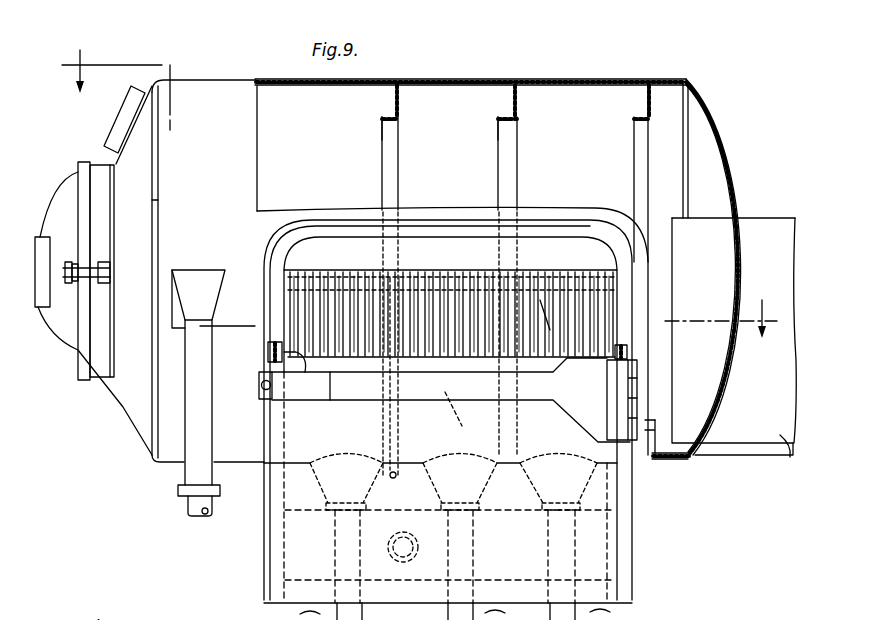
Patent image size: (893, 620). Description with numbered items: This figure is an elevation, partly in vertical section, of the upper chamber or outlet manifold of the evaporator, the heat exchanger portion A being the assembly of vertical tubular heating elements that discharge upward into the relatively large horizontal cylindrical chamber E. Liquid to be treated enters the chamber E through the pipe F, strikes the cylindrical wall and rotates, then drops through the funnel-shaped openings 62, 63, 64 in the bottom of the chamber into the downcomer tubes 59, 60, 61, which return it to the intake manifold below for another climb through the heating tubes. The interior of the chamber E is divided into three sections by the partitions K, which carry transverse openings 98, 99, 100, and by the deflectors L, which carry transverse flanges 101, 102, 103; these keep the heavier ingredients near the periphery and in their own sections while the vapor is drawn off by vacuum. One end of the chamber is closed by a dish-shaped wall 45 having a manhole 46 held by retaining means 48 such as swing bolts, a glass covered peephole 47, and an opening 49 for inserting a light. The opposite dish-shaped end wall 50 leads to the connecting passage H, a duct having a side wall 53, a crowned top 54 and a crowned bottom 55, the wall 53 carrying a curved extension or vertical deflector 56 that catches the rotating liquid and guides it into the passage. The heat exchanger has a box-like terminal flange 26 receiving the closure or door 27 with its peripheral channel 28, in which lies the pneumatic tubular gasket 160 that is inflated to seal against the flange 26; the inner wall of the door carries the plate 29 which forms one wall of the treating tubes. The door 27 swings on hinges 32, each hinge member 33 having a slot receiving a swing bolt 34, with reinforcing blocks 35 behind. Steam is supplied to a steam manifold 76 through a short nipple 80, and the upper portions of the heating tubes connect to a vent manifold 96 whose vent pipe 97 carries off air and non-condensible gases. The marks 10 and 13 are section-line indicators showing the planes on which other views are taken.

The section line 10- 10 is at (418, 185).
The section line 13-13 / clamp 13 is at (262, 354).
The terminal flange 26 is at (266, 305).
The closure 27 is at (544, 250).
The peripheral channel 28 is at (620, 527).
The plate 29 is at (550, 312).
The hinges 32 is at (607, 390).
The hinge member 33 is at (470, 386).
The swing bolt 34 is at (258, 386).
The reinforcing blocks 35 is at (462, 416).
The dish-shaped wall 45 is at (137, 204).
The manhole 46 is at (70, 343).
The glass covered peephole 47 is at (76, 170).
The retaining means 48 is at (93, 262).
The opening 49 is at (115, 116).
The dish-shaped end wall 50 is at (727, 162).
The side wall 53 is at (790, 355).
The top 54 is at (770, 213).
The bottom 55 is at (735, 448).
The extension 56 is at (712, 318).
The downcomer tube 59 is at (347, 545).
The downcomer tube 60 is at (463, 558).
The downcomer tube 61 is at (557, 557).
The funnel-shaped opening 62 is at (366, 488).
The funnel-shaped opening 63 is at (476, 490).
The funnel-shaped opening 64 is at (574, 489).
The steam manifold 76 is at (455, 611).
The short nipple 80 is at (403, 533).
The vent manifold 96 is at (423, 283).
The vent pipe 97 is at (390, 276).
The transverse opening 98 is at (392, 440).
The transverse opening 99 is at (520, 447).
The transverse opening 100 is at (656, 443).
The transverse flange 101 is at (383, 116).
The transverse flange 102 is at (506, 116).
The transverse flange 103 is at (645, 103).
The tubular gasket 160 is at (304, 374).
The heat exchanger portion A is at (212, 96).
The horizontal cylindrical chamber E is at (594, 95).
The pipe F is at (195, 400).
The connecting passage H is at (780, 441).
The partitions K is at (400, 431).
The deflectors L is at (400, 122).